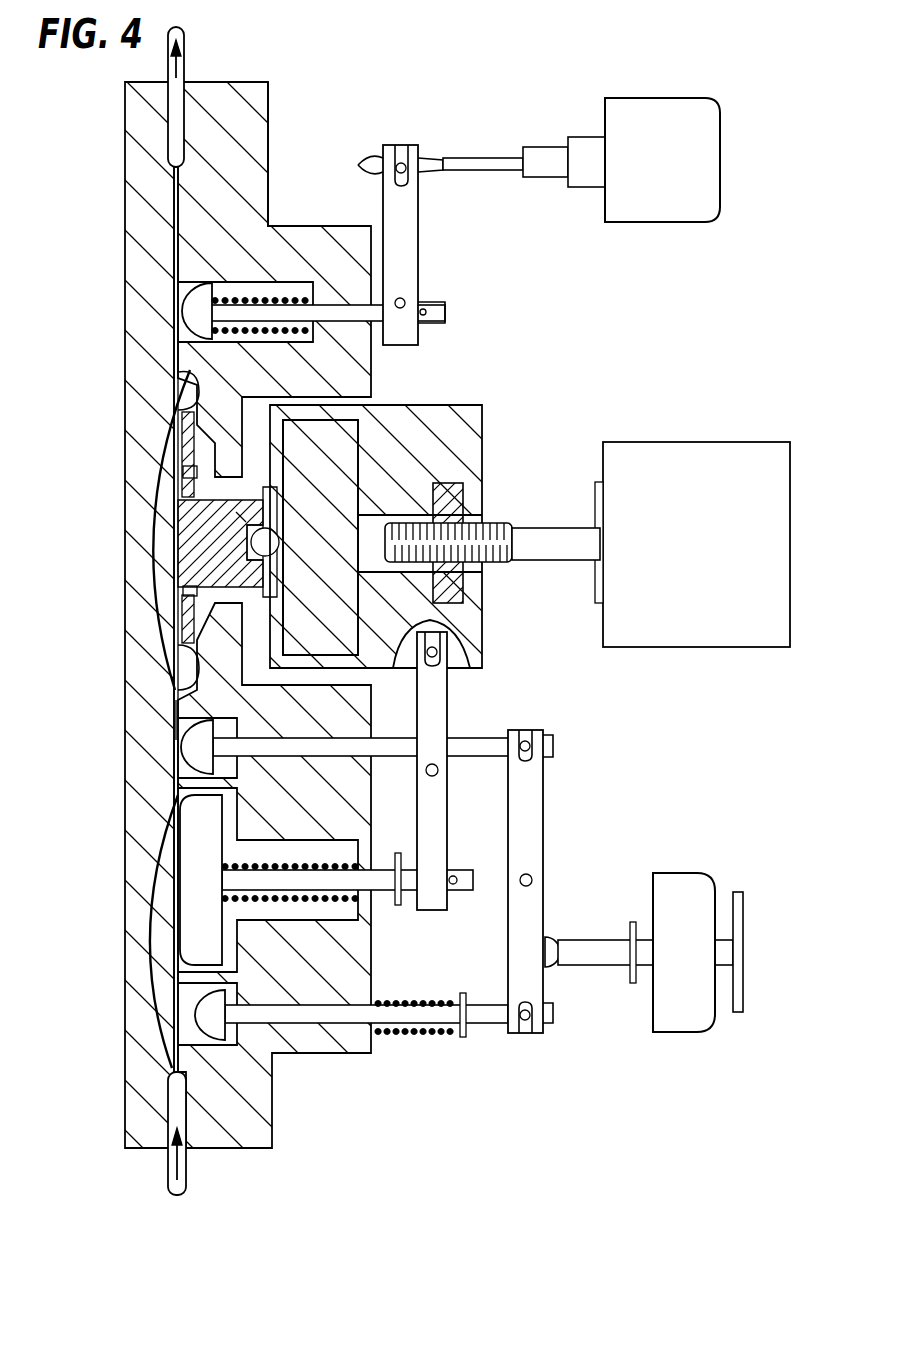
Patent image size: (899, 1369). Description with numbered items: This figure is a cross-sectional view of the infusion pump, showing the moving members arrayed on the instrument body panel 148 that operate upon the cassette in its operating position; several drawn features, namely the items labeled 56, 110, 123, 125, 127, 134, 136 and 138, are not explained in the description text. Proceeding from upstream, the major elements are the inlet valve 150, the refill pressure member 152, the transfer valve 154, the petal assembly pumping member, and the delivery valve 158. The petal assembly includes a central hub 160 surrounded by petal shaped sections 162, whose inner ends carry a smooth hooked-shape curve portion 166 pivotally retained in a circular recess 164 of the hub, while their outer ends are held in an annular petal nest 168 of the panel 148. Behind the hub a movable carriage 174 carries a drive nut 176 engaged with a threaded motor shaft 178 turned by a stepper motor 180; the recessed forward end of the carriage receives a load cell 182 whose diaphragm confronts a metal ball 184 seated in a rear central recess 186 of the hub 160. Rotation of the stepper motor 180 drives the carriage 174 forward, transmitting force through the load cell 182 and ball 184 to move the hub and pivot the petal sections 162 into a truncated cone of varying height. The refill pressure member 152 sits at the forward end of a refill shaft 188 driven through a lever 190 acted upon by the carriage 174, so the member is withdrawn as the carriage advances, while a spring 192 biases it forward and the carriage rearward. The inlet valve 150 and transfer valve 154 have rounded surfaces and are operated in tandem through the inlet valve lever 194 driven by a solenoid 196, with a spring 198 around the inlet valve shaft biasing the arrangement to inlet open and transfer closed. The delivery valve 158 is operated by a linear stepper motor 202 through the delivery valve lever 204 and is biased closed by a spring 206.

The outlet tube 56 is at (186, 1172).
The valve body 110 is at (125, 108).
The outlet tube 123 is at (170, 1068).
The flow channel 125 is at (172, 202).
The inlet tube 127 is at (185, 42).
The lower diaphragm 134 is at (158, 855).
The channel opening 136 is at (176, 726).
The upper diaphragm 138 is at (160, 578).
The panel 148 is at (264, 82).
The inlet valve 150 is at (204, 1012).
The refill pressure member 152 is at (192, 888).
The transfer valve 154 is at (196, 748).
The delivery valve 158 is at (196, 306).
The central hub 160 is at (205, 560).
The petal shaped sections 162 is at (186, 440).
The circular recess 164 is at (256, 492).
The hooked-shape curve portion 166 is at (190, 472).
The annular petal nest 168 is at (186, 385).
The movable carriage 174 is at (480, 640).
The drive nut 176 is at (462, 506).
The threaded motor shaft 178 is at (525, 528).
The stepper motor 180 is at (730, 640).
The load cell 182 is at (345, 500).
The metal ball 184 is at (256, 542).
The rear central recess 186 is at (240, 518).
The refill shaft 188 is at (387, 892).
The lever 190 is at (448, 690).
The spring 192 is at (222, 905).
The inlet valve lever 194 is at (545, 790).
The solenoid 196 is at (702, 1025).
The spring 198 is at (450, 1030).
The linear stepper motor 202 is at (682, 100).
The delivery valve lever 204 is at (420, 228).
The spring 206 is at (303, 290).